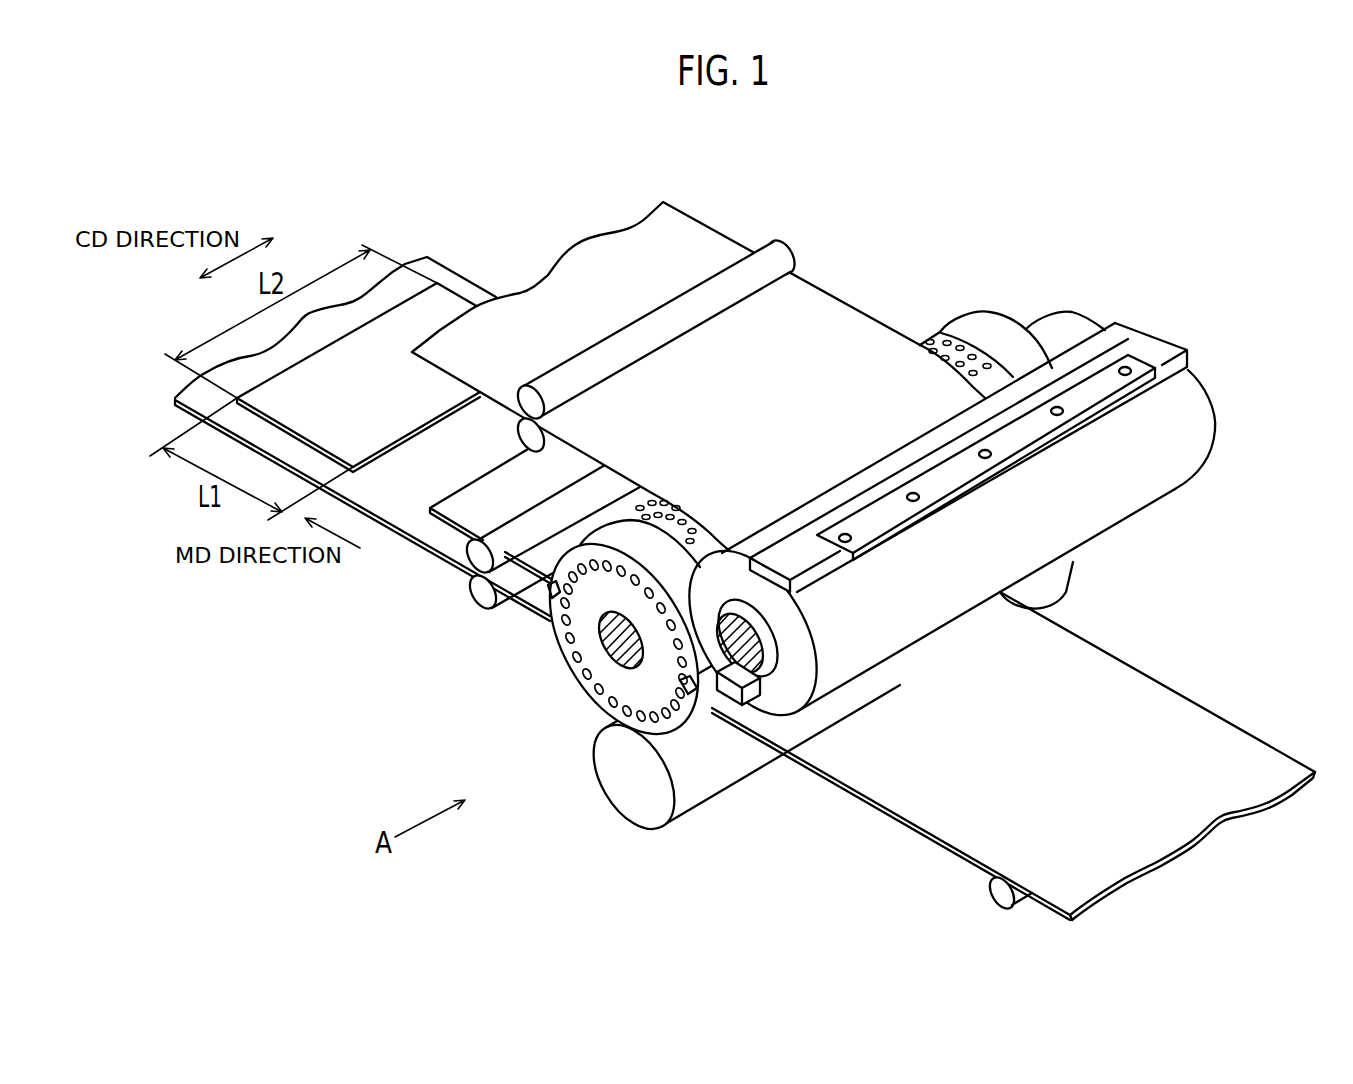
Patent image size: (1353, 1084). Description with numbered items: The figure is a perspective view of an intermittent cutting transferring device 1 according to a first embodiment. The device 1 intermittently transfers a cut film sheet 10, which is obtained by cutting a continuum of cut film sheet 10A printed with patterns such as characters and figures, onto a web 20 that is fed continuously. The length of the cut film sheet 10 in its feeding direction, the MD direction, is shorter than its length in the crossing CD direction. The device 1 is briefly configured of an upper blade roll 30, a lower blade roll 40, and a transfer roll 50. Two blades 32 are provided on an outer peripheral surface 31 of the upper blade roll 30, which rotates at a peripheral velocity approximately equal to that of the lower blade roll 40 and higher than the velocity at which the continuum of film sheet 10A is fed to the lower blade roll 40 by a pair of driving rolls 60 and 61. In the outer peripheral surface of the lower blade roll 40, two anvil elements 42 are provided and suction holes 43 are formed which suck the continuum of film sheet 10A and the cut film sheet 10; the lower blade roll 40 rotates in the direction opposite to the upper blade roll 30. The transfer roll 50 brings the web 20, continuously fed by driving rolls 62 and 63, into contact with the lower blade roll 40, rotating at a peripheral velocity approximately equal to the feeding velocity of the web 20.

The intermittent cutting transferring device 1 is at (1196, 179).
The cut film sheet 10 is at (446, 302).
The continuum of cut film sheet 10A is at (708, 245).
The web 20 is at (1187, 737).
The upper blade roll 30 is at (1225, 410).
The outer peripheral surface 31 is at (1167, 480).
The blade 32 is at (1137, 365).
The lower blade roll 40 is at (784, 546).
The anvil element 42 is at (533, 613).
The suction hole 43 is at (935, 335).
The transfer roll 50 is at (607, 841).
The driving roll 60 is at (790, 250).
The driving roll 61 is at (533, 435).
The driving roll 62 is at (460, 555).
The driving roll 63 is at (467, 595).